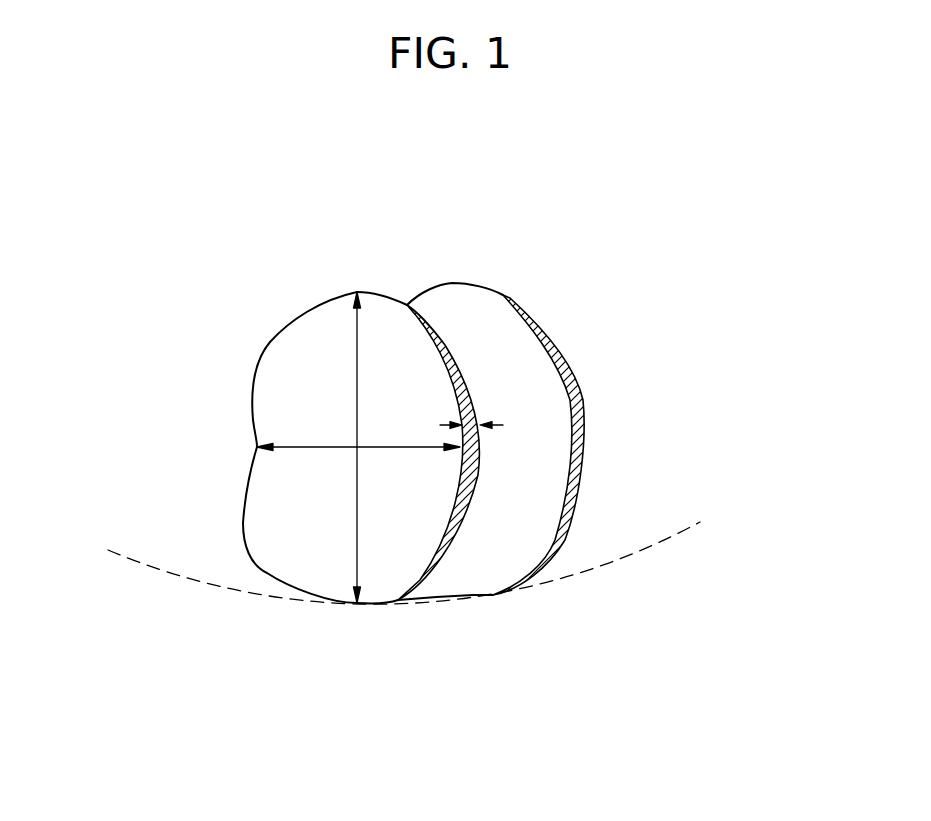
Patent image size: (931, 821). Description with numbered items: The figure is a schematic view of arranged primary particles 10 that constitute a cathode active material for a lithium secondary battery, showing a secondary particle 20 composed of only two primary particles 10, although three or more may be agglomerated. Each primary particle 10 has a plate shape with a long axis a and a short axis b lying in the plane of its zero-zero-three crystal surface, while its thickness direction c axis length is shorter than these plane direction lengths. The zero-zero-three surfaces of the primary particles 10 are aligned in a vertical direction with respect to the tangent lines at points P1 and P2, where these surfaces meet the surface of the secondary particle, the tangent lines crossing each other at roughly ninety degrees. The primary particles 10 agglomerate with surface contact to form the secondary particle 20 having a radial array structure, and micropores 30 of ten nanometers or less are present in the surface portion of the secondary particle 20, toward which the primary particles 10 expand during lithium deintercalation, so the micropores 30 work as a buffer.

The secondary particle 20 is at (365, 204).
The primary particles 10 is at (325, 297).
The micropores 30 is at (408, 604).
The a axis a is at (356, 357).
The b axis b is at (280, 433).
The point P1 is at (357, 605).
The point P2 is at (491, 597).